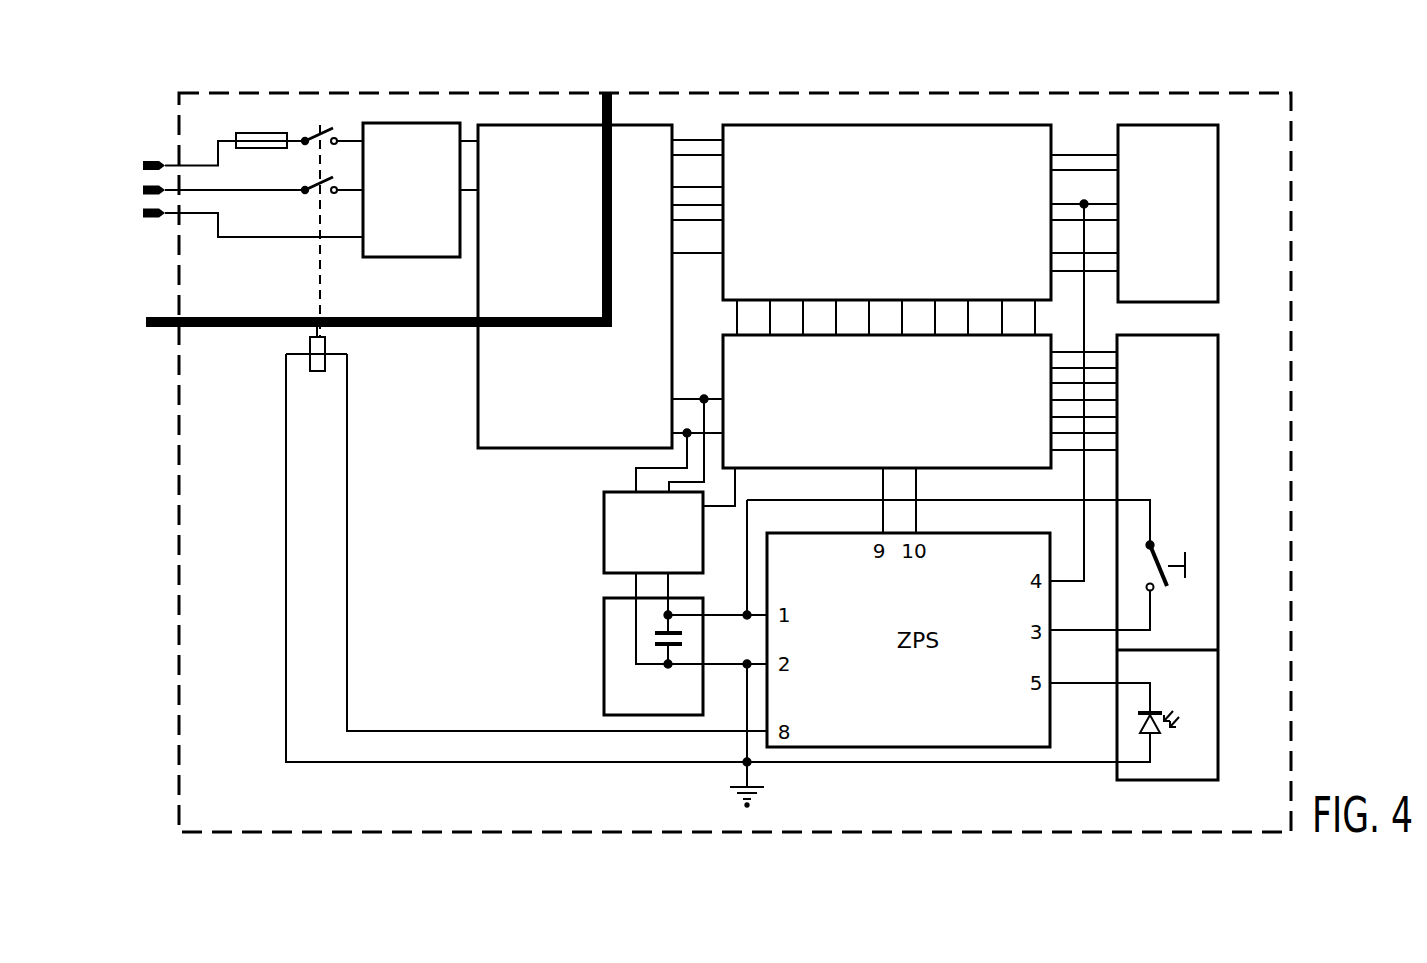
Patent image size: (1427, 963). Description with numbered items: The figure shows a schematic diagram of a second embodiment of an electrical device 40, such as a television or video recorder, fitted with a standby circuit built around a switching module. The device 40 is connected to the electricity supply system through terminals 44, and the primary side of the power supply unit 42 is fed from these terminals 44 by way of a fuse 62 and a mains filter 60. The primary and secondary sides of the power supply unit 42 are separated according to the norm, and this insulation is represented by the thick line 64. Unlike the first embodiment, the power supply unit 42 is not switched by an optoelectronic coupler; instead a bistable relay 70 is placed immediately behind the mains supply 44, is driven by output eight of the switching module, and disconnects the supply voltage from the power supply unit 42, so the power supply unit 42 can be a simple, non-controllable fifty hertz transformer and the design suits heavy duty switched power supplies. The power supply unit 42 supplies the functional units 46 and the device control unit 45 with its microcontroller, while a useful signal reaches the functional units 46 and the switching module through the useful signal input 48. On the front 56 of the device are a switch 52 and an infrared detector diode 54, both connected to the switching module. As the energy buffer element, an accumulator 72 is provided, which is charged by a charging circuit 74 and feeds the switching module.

The electrical device 40 is at (1293, 150).
The terminals 44 is at (143, 190).
The fuse 62 is at (271, 132).
The bistable relay 70 is at (318, 274).
The thick line 64 is at (388, 317).
The mains filter 60 is at (420, 190).
The power supply unit 42 is at (600, 286).
The functional units 46 is at (920, 353).
The useful signal input 48 is at (1168, 213).
The device control unit 45 is at (876, 434).
The front 56 is at (1167, 557).
The switch 52 is at (1170, 552).
The infrared detector diode 54 is at (1160, 733).
The charging circuit 74 is at (606, 529).
The accumulator 72 is at (655, 634).